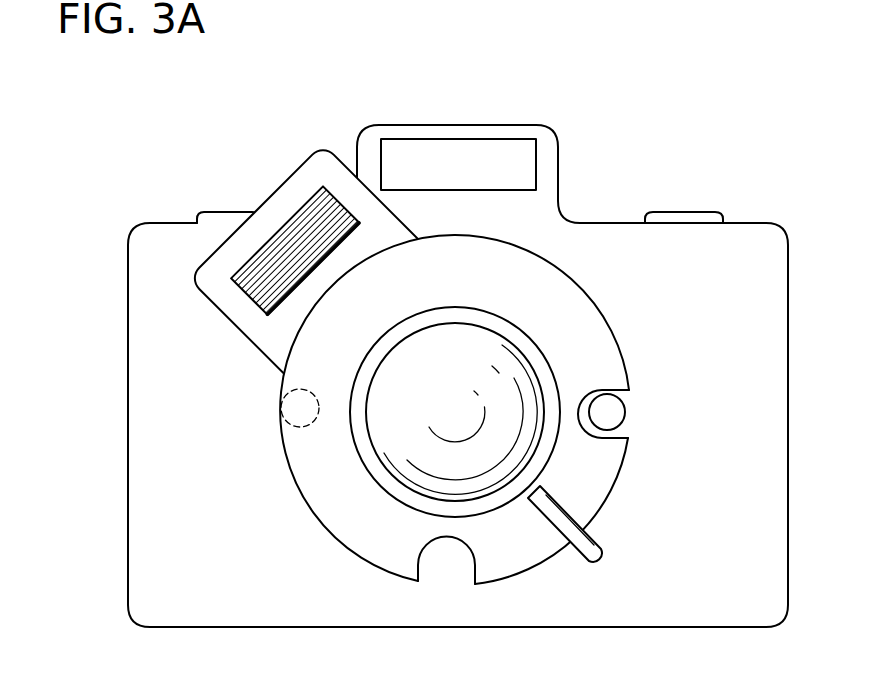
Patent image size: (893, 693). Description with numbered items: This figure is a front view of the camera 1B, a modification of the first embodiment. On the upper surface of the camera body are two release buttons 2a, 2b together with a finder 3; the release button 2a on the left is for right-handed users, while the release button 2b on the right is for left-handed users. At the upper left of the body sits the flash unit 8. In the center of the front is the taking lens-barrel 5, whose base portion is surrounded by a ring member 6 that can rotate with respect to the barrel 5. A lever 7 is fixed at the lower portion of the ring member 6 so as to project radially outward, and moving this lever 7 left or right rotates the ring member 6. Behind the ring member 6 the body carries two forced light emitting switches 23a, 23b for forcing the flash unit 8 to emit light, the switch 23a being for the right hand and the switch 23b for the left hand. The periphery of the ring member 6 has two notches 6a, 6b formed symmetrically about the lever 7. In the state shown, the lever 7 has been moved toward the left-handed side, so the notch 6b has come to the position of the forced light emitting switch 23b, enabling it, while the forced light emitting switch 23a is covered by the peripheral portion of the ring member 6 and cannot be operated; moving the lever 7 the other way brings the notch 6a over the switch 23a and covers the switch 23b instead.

The camera 1B is at (599, 162).
The release button 2a is at (212, 210).
The release button 2b is at (676, 213).
The finder 3 is at (485, 150).
The taking lens-barrel 5 is at (533, 352).
The ring member 6 is at (350, 538).
The notch 6a is at (420, 560).
The notch 6b is at (612, 410).
The lever 7 is at (587, 553).
The flash unit 8 is at (310, 207).
The forced light emitting switch 23a is at (293, 423).
The forced light emitting switch 23b is at (607, 420).